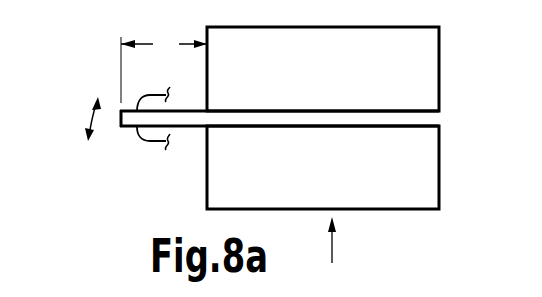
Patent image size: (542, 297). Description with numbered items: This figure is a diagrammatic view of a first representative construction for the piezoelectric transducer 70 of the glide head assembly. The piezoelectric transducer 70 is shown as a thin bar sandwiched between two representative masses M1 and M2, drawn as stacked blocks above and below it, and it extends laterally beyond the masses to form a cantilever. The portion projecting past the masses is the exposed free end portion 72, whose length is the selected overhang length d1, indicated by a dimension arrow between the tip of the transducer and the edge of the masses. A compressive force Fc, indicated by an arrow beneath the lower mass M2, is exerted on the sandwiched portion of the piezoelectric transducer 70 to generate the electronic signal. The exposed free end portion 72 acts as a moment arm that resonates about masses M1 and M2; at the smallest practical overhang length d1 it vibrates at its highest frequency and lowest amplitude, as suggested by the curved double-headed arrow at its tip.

The piezoelectric transducer 70 is at (238, 127).
The exposed free end portion 72 is at (120, 109).
The representative mass M1 is at (323, 69).
The representative mass M2 is at (323, 167).
The overhang length d1 is at (164, 67).
The compressive force Fc is at (346, 245).